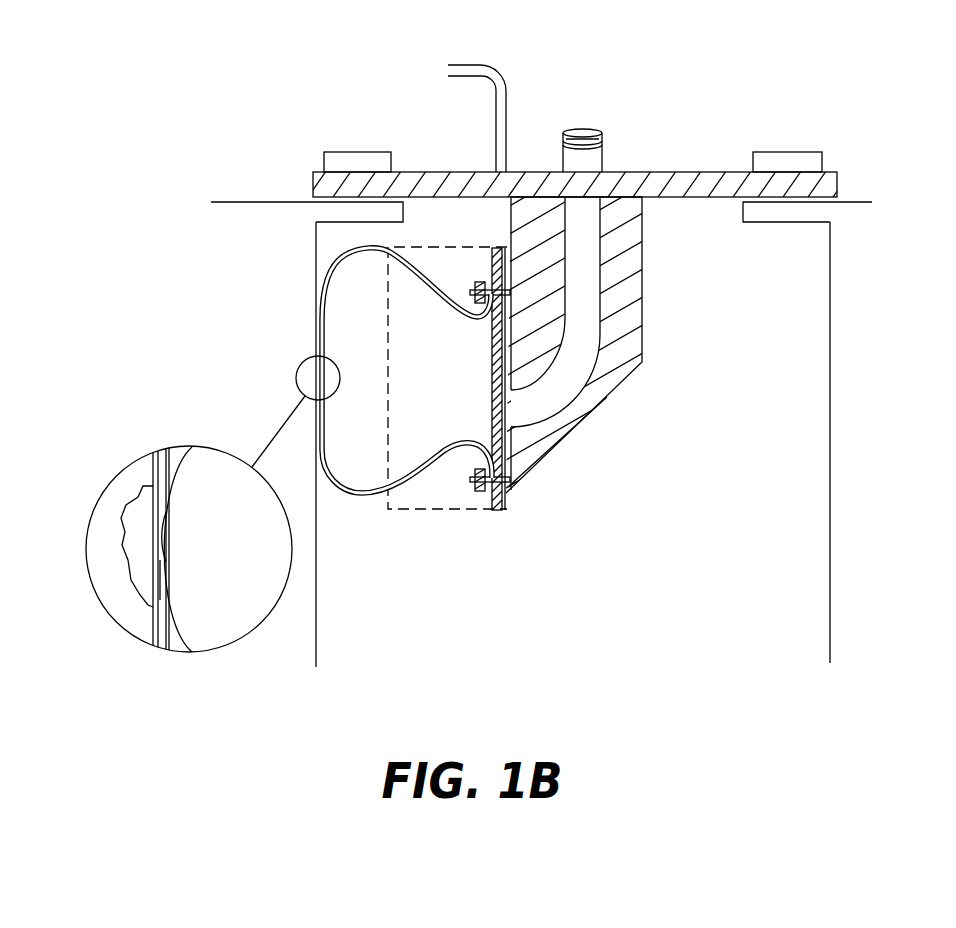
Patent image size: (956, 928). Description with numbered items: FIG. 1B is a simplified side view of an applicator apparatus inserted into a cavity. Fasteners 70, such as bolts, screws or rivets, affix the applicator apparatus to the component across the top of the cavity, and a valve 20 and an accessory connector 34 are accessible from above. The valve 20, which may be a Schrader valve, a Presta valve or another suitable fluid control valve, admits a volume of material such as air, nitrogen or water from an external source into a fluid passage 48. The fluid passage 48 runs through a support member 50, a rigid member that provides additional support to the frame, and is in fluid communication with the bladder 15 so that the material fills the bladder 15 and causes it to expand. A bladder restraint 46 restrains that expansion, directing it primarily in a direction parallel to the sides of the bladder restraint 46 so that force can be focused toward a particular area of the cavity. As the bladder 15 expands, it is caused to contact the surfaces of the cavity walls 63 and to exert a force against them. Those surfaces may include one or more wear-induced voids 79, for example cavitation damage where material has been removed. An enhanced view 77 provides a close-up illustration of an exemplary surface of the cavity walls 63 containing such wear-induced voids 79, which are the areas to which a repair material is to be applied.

The bladder 15 is at (338, 261).
The valve 20 is at (580, 133).
The accessory connector 34 is at (505, 78).
The bladder restraint 46 is at (447, 509).
The fluid passage 48 is at (589, 360).
The support member 50 is at (642, 308).
The cavity wall 63 is at (316, 630).
The fastener 70 is at (378, 152).
The enhanced view 77 is at (148, 648).
The wear-induced void 79 is at (153, 551).